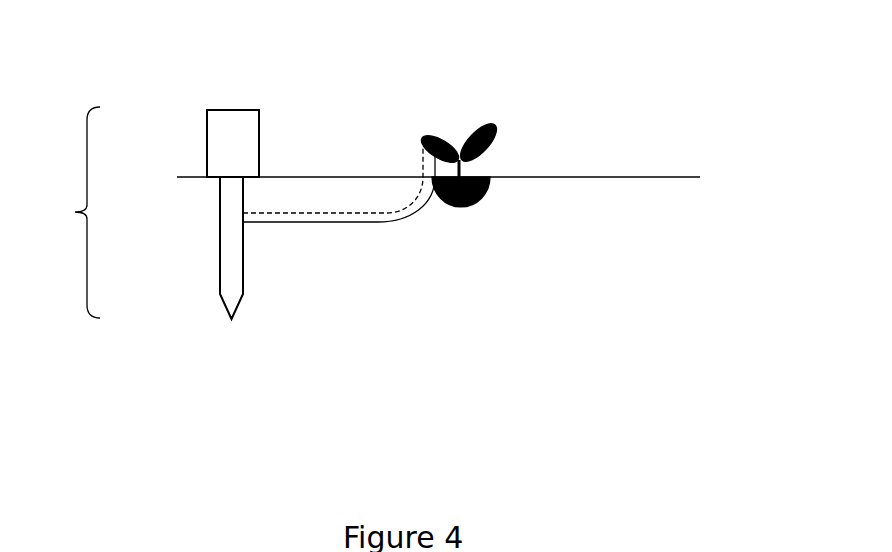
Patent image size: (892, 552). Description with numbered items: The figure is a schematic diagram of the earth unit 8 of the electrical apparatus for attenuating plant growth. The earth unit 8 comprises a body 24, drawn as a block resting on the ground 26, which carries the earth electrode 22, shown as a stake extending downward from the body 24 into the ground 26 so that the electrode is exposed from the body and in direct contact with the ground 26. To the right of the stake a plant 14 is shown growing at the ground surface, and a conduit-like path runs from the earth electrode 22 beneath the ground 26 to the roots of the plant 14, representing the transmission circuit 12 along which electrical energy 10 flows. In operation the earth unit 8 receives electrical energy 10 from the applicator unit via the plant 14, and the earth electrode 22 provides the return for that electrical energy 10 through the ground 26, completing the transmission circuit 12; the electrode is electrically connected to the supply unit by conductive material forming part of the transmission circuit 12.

The earth unit 8 is at (71, 212).
The electrical energy 10 is at (328, 214).
The transmission circuit 12 is at (380, 222).
The plant 14 is at (495, 122).
The earth electrode 22 is at (232, 244).
The body 24 is at (207, 125).
The ground 26 is at (670, 177).